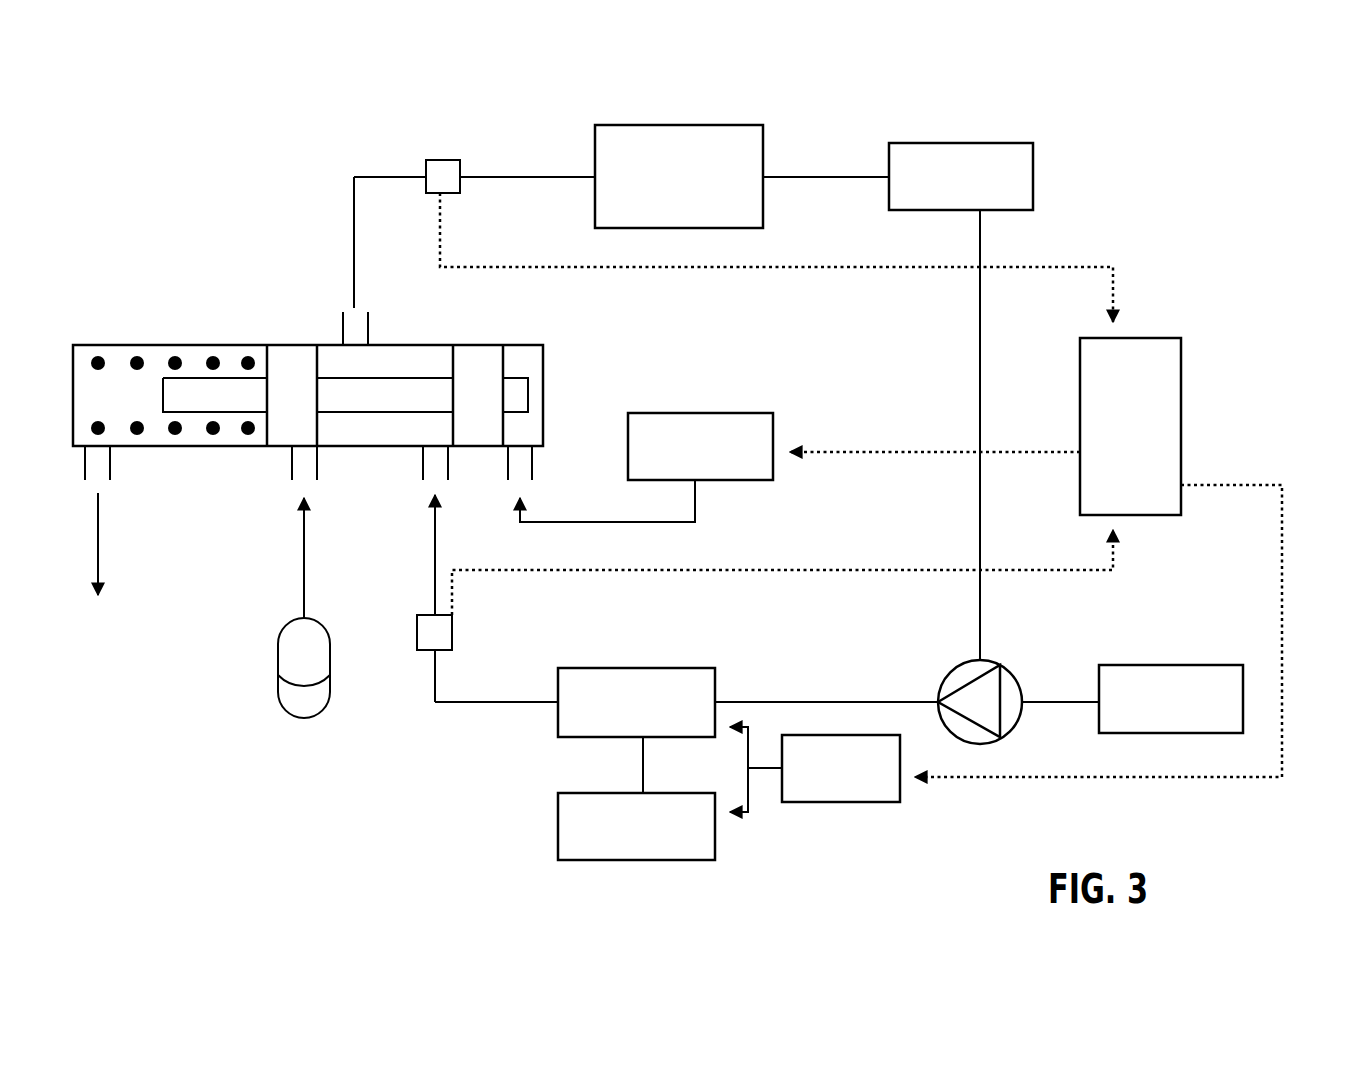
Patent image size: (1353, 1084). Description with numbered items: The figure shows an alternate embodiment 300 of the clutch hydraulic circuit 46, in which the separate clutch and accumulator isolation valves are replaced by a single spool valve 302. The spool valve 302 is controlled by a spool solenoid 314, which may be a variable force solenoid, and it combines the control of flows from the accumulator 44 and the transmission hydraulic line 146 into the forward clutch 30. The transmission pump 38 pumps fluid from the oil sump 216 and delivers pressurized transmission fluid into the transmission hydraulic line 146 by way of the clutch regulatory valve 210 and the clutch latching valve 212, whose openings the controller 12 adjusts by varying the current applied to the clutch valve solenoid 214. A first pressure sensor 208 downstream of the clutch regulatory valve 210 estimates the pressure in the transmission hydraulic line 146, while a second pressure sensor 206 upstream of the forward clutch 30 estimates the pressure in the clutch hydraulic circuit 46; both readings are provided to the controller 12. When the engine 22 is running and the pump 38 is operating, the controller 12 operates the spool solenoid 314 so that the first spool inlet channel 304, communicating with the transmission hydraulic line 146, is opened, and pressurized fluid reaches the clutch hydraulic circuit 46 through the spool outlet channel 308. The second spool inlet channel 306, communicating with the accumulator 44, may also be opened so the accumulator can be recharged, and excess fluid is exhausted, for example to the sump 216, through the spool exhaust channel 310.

The alternate embodiment of clutch hydraulic circuit 300 is at (1247, 145).
The clutch hydraulic circuit 46 is at (876, 112).
The forward clutch 30 is at (742, 176).
The oil sump 216 is at (961, 401).
The second pressure sensor 206 is at (448, 158).
The spool outlet channel 308 is at (370, 328).
The spool valve 302 is at (512, 343).
The spool exhaust channel 310 is at (100, 472).
The second spool inlet channel 306 is at (310, 472).
The first spool inlet channel 304 is at (440, 472).
The spool solenoid 314 is at (700, 446).
The controller 12 is at (1036, 534).
The first pressure sensor 208 is at (453, 630).
The transmission hydraulic line 146 is at (462, 698).
The accumulator 44 is at (327, 630).
The clutch regulatory valve 210 is at (748, 730).
The clutch latching valve 212 is at (636, 826).
The clutch valve solenoid 214 is at (815, 769).
The transmission pump 38 is at (993, 660).
The engine 22 is at (1171, 699).